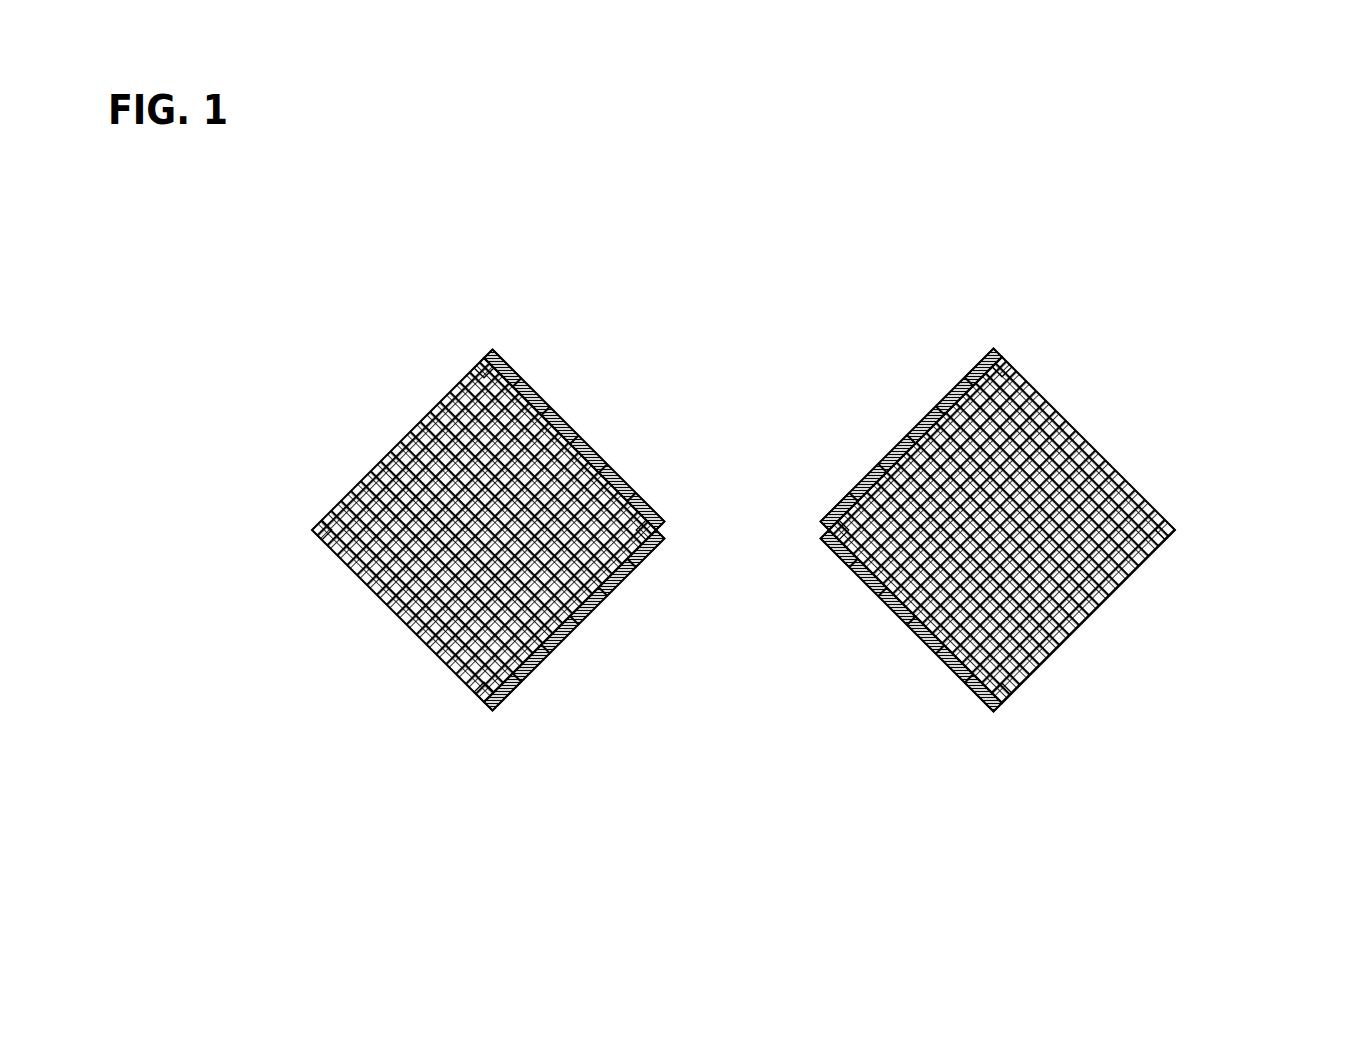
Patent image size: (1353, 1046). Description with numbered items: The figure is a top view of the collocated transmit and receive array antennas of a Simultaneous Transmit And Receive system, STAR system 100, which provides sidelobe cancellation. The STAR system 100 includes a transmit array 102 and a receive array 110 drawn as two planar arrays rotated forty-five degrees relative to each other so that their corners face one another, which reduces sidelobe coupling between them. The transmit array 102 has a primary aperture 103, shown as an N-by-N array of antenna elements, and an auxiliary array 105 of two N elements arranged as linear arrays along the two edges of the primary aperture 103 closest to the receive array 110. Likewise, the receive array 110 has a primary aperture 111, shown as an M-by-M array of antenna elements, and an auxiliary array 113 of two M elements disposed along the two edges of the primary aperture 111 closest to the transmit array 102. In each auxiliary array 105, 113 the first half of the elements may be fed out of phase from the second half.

The STAR system 100 is at (290, 224).
The transmit array 102 is at (617, 388).
The primary aperture 103 is at (482, 518).
The auxiliary array 105 is at (487, 355).
The receive array 110 is at (1130, 405).
The primary aperture 111 is at (1005, 545).
The auxiliary array 113 is at (1001, 355).